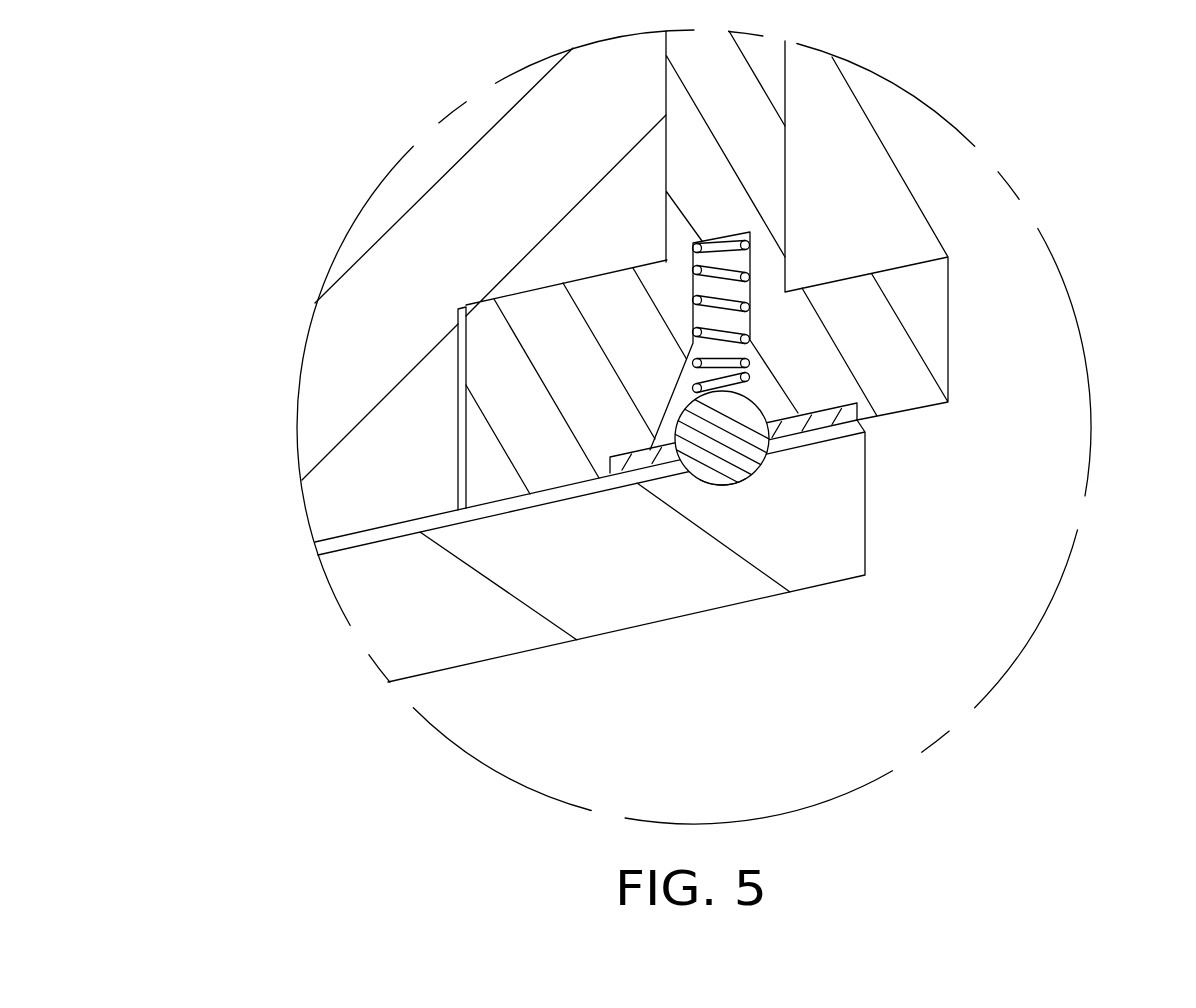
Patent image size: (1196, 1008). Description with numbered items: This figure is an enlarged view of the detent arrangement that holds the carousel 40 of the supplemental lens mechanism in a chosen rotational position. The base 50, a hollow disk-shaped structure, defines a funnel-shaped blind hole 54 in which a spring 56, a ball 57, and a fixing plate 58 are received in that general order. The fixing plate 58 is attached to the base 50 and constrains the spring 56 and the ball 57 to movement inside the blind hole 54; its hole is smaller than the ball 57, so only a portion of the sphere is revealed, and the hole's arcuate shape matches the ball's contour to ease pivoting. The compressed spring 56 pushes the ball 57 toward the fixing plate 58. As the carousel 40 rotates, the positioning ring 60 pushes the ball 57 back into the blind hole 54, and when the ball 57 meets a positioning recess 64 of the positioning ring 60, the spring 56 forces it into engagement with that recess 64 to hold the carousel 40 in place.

The carousel 40 is at (365, 482).
The base 50 is at (920, 323).
The blind hole 54 is at (762, 387).
The spring 56 is at (728, 307).
The ball 57 is at (727, 432).
The fixing plate 58 is at (835, 412).
The positioning ring 60 is at (813, 563).
The positioning recess 64 is at (745, 478).